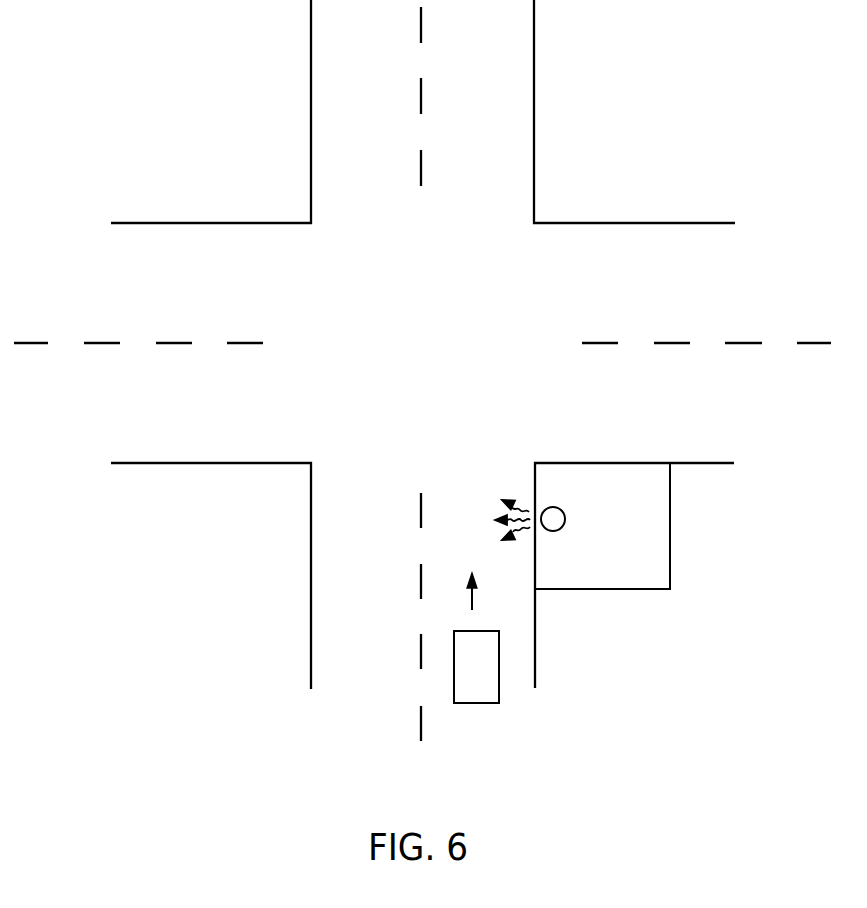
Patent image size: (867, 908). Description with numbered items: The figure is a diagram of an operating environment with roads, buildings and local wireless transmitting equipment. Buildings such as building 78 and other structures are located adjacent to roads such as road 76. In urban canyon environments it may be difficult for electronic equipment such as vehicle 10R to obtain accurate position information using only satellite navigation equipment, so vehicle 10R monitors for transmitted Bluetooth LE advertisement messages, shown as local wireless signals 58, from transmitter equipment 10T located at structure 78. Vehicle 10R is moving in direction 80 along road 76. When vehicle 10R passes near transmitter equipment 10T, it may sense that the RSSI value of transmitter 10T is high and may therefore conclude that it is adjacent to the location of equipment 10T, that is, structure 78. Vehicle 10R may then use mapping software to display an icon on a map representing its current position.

The road 76 is at (531, 110).
The building 78 is at (667, 565).
The transmitter equipment 10T is at (555, 531).
The vehicle 10R is at (476, 703).
The direction 80 is at (475, 597).
The local wireless signals 58 is at (520, 505).